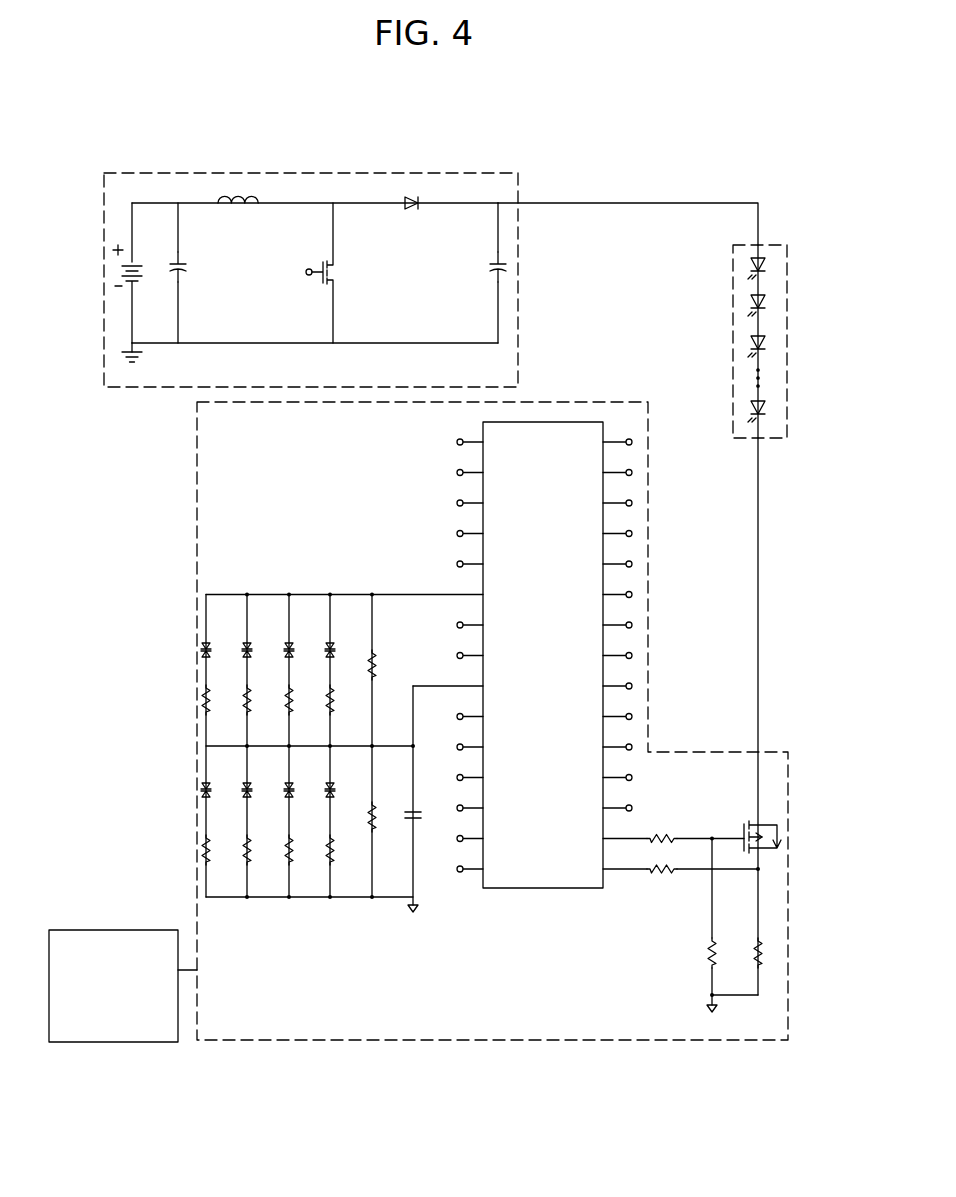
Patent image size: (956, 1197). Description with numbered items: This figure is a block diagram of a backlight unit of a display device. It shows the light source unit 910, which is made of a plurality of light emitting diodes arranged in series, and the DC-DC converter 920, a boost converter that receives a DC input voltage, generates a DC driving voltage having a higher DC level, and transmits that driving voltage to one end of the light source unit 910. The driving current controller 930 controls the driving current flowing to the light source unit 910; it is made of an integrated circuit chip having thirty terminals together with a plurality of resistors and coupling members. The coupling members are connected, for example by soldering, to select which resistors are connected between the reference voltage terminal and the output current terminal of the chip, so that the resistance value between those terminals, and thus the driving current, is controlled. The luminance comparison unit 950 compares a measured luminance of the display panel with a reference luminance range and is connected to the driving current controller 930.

The light source unit 910 is at (733, 343).
The DC-DC converter 920 is at (518, 292).
The driving current controller 930 is at (197, 520).
The luminance comparison unit 950 is at (153, 930).